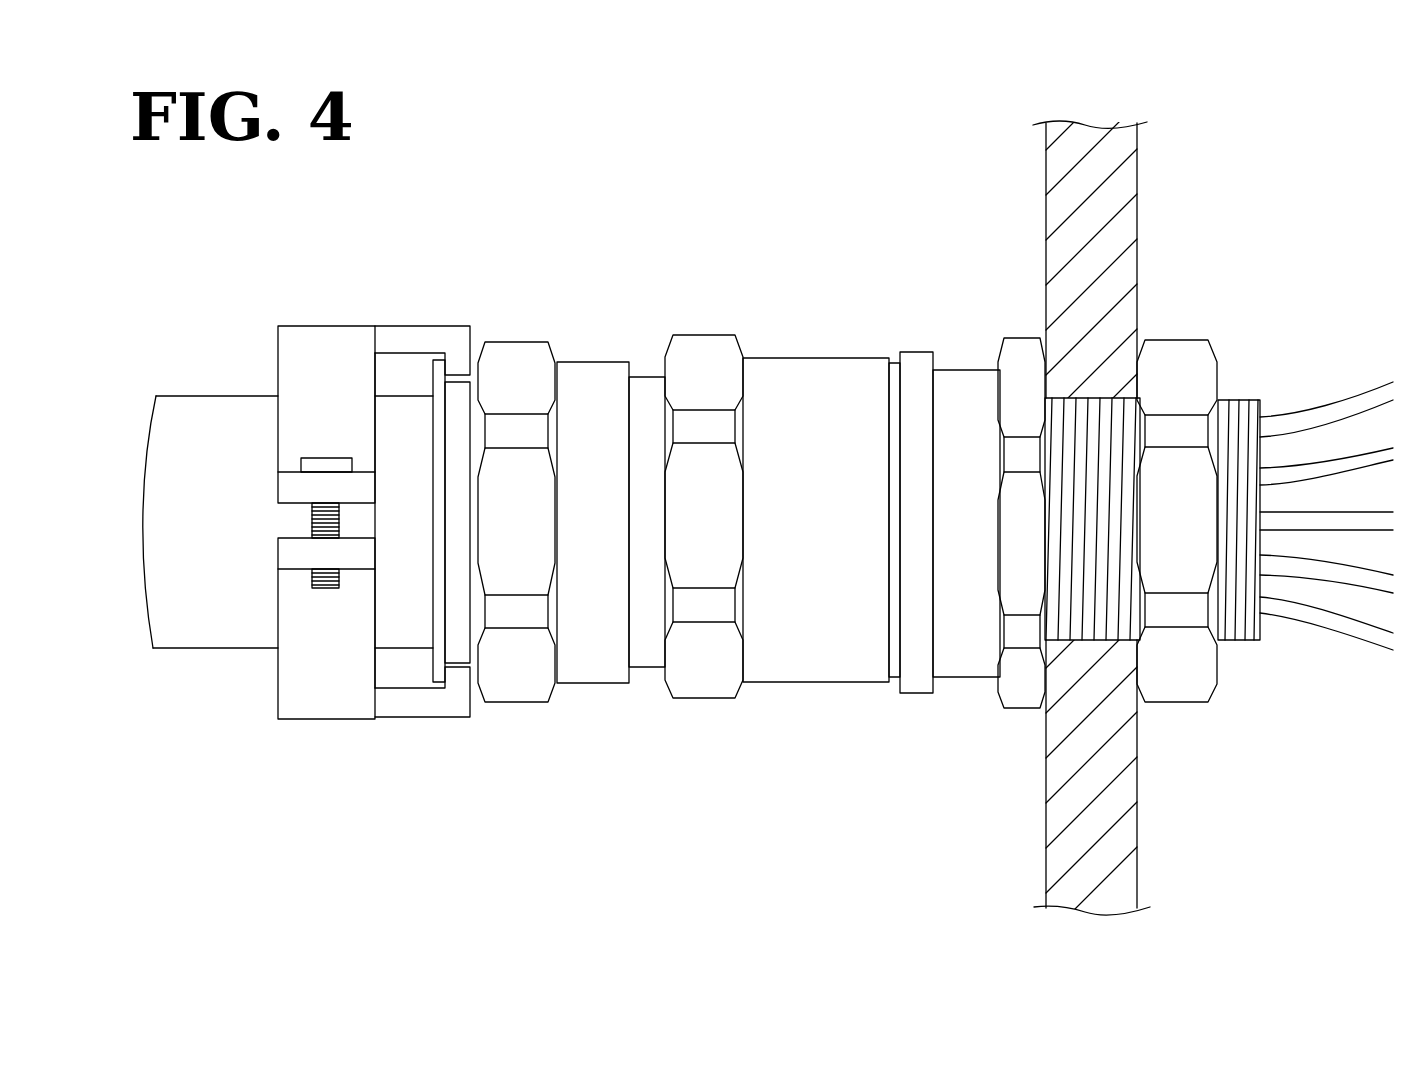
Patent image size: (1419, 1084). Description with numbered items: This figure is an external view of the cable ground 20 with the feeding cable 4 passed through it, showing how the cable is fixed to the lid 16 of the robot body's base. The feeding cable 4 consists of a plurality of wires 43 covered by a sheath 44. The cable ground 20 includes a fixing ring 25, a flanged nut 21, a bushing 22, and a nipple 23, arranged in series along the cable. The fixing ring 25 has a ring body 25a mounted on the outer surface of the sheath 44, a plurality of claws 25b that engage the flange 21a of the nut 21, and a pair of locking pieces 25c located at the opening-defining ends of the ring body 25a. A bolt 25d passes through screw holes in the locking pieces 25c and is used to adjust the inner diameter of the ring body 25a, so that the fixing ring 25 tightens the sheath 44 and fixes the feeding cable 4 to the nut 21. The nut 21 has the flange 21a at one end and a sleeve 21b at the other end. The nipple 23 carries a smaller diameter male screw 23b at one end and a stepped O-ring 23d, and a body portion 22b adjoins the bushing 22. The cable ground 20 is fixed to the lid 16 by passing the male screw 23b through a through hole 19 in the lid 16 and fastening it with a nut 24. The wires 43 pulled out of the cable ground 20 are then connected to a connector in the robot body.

The feeding cable 4 is at (211, 389).
The sheath 44 is at (202, 619).
The lid 16 is at (1128, 195).
The through hole 19 is at (1112, 639).
The cable ground 20 is at (825, 479).
The flanged nut 21 is at (510, 337).
The flange 21a is at (440, 369).
The sleeve 21b is at (583, 374).
The bushing 22 is at (708, 330).
The second tubular body 22b is at (817, 378).
The nipple 23 is at (972, 355).
The smaller diameter male screw 23b is at (1233, 405).
The stepped O-ring 23d is at (913, 680).
The nut 24 is at (1178, 357).
The fixing ring 25 is at (298, 515).
The ring body 25a is at (314, 354).
The claws 25b is at (458, 681).
The locking pieces 25c is at (345, 560).
The bolt 25d is at (326, 460).
The wires 43 is at (1310, 417).